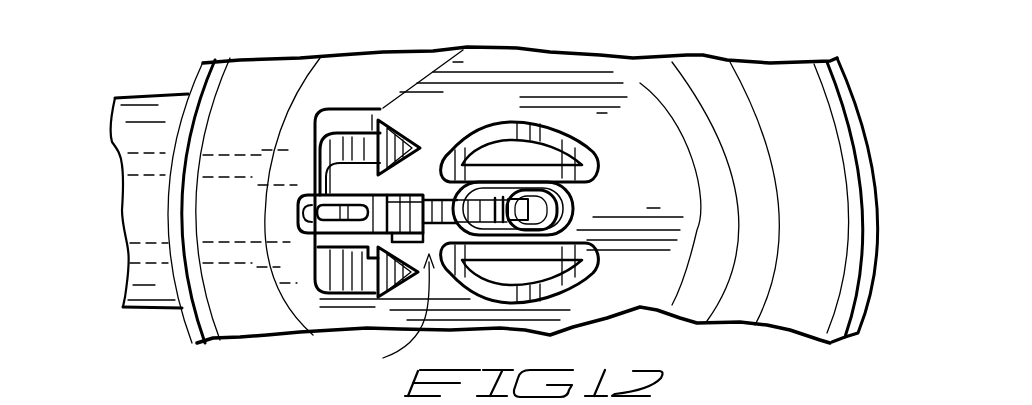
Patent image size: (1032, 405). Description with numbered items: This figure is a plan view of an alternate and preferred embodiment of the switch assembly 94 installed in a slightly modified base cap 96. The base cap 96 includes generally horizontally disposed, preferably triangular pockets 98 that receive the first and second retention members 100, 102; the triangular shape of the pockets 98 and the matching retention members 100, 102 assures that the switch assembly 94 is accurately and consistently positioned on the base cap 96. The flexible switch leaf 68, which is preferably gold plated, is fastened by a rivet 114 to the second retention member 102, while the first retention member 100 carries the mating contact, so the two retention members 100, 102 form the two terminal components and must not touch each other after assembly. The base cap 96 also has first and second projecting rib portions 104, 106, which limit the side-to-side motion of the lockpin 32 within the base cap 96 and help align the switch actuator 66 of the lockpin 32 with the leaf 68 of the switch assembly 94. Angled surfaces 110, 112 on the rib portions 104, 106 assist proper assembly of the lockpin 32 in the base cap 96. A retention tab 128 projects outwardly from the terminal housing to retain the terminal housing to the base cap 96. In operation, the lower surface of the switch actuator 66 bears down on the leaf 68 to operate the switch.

The lockpin 32 is at (541, 186).
The switch actuator 66 is at (455, 180).
The switch leaf 68 is at (357, 193).
The switch assembly 94 is at (390, 313).
The base cap 96 is at (793, 83).
The pockets 98 is at (400, 140).
The first retention member 100 is at (335, 268).
The second retention member 102 is at (333, 108).
The first projecting rib portion 104 is at (513, 150).
The second projecting rib portion 106 is at (595, 155).
The angled surface 110 is at (585, 240).
The angled surface 112 is at (580, 187).
The rivet 114 is at (297, 206).
The retention tab 128 is at (299, 193).